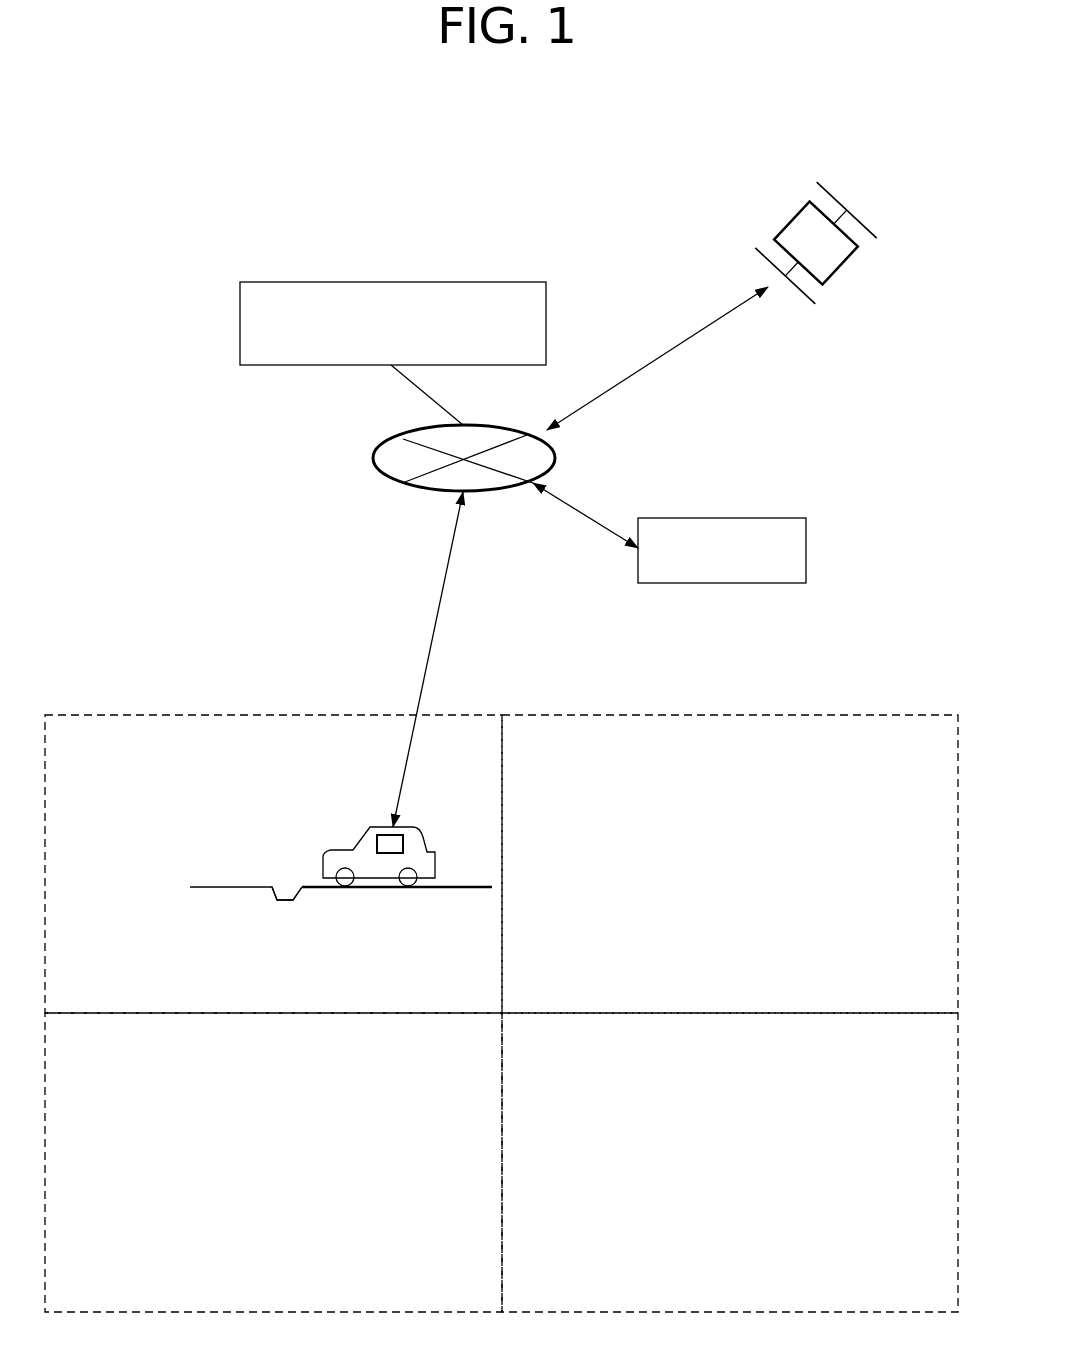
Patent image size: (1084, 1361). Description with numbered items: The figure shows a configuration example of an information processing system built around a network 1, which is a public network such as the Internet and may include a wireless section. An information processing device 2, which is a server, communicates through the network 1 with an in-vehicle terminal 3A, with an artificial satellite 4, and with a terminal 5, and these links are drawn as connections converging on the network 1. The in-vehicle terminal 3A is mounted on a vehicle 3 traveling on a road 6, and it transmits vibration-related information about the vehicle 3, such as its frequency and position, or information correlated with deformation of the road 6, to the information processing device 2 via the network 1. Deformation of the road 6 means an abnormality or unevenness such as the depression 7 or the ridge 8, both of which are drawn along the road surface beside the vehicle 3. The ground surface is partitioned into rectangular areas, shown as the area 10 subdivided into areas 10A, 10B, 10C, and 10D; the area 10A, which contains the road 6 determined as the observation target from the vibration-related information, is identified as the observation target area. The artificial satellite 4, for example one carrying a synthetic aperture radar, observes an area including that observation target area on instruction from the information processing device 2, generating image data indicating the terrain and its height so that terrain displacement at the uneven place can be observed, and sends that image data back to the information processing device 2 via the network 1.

The network 1 is at (373, 466).
The information processing device 2 is at (393, 282).
The vehicle 3 is at (323, 858).
The in-vehicle terminal 3A is at (404, 838).
The artificial satellite 4 is at (832, 188).
The terminal 5 is at (750, 518).
The road 6 is at (459, 887).
The depression 7 is at (289, 900).
The ridge 8 is at (222, 885).
The area 10 is at (501, 1013).
The area 10A is at (172, 770).
The area 10B is at (172, 1067).
The area 10C is at (929, 770).
The area 10D is at (929, 1067).